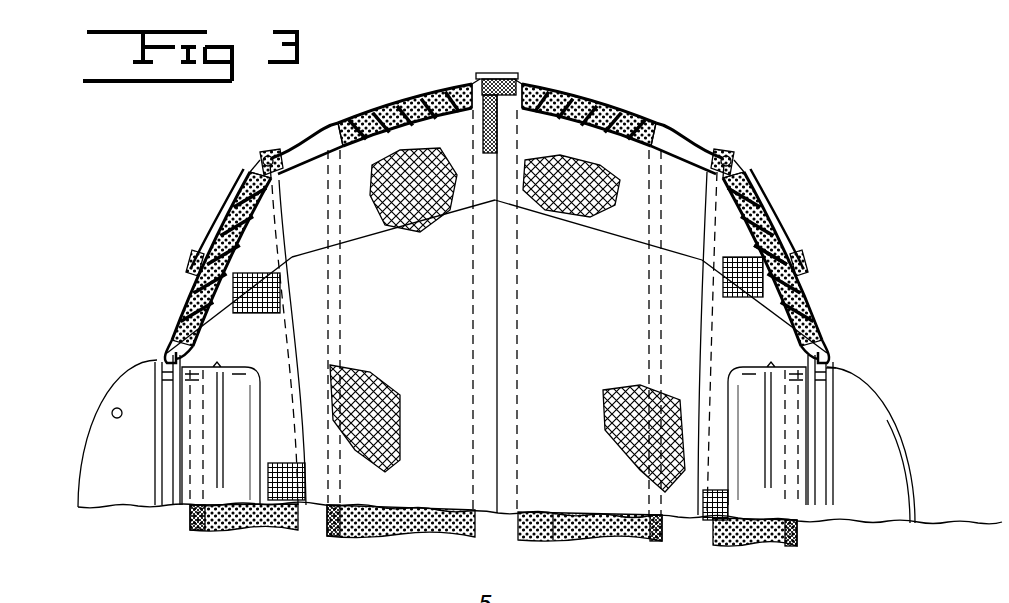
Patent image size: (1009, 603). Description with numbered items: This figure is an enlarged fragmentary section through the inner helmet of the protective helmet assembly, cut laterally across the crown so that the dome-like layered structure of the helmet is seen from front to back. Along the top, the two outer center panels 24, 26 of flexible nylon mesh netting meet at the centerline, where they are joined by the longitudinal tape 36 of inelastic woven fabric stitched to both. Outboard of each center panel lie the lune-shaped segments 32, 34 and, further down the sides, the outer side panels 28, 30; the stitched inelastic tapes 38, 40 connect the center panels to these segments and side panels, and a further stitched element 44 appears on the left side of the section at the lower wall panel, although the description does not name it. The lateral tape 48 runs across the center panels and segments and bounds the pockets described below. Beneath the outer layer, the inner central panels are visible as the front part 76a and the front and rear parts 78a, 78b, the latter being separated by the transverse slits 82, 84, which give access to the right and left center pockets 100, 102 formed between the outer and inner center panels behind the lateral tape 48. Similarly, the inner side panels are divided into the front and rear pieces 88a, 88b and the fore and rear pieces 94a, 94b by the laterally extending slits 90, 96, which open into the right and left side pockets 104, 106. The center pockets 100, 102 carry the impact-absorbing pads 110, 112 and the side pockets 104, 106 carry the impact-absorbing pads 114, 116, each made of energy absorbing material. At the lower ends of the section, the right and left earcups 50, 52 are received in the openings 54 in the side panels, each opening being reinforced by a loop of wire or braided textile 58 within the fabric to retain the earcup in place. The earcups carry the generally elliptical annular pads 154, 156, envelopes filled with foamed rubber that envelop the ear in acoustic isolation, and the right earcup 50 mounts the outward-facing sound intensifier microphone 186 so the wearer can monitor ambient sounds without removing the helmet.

The outer center panel 24 is at (437, 80).
The outer center panel 26 is at (582, 88).
The outer side panel 28 is at (177, 300).
The outer side panel 30 is at (817, 300).
The lune-shaped segment 32 is at (240, 188).
The lune-shaped segment 34 is at (773, 190).
The longitudinal tape 36 is at (493, 74).
The inelastic woven tape 38 is at (263, 153).
The inelastic woven tape 40 is at (727, 172).
The right clip 44 is at (807, 267).
The lateral tape 48 is at (540, 552).
The right earcup 50 is at (128, 387).
The left earcup 52 is at (878, 523).
The opening 54 is at (830, 372).
The loop of wire or braided textile 58 is at (164, 353).
The front part of inner central panel 76a is at (408, 140).
The front part of inner central panel 78a is at (623, 153).
The rear part of inner central panel 78b is at (553, 512).
The transverse slit 82 is at (370, 238).
The transverse slit 84 is at (607, 236).
The front piece of inner side panel 88a is at (227, 297).
The rear piece of inner side panel 88b is at (277, 500).
The laterally extending slit 90 is at (267, 277).
The fore piece of inner side panel 94a is at (757, 228).
The rear piece of inner side panel 94b is at (703, 520).
The slit 96 is at (727, 278).
The right center pocket 100 is at (308, 147).
The left center pocket 102 is at (677, 133).
The right side pocket 104 is at (221, 212).
The left side pocket 106 is at (818, 323).
The impact-absorbing pad 110 is at (358, 112).
The impact-absorbing pad 112 is at (604, 100).
The impact-absorbing pad 114 is at (240, 185).
The impact-absorbing pad 116 is at (780, 205).
The annular pad 154 is at (240, 375).
The annular pad 156 is at (735, 375).
The sound intensifier microphone 186 is at (112, 412).